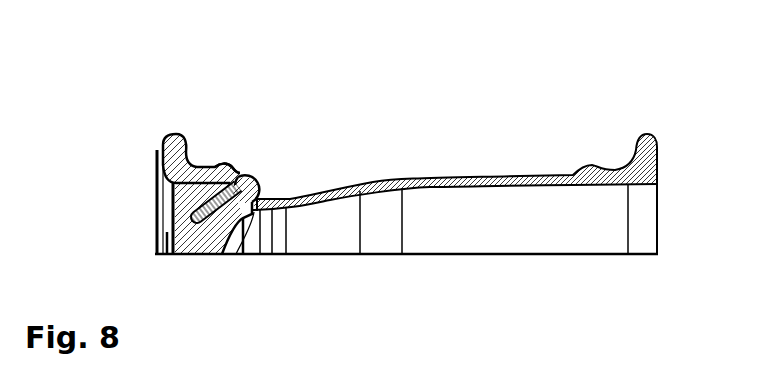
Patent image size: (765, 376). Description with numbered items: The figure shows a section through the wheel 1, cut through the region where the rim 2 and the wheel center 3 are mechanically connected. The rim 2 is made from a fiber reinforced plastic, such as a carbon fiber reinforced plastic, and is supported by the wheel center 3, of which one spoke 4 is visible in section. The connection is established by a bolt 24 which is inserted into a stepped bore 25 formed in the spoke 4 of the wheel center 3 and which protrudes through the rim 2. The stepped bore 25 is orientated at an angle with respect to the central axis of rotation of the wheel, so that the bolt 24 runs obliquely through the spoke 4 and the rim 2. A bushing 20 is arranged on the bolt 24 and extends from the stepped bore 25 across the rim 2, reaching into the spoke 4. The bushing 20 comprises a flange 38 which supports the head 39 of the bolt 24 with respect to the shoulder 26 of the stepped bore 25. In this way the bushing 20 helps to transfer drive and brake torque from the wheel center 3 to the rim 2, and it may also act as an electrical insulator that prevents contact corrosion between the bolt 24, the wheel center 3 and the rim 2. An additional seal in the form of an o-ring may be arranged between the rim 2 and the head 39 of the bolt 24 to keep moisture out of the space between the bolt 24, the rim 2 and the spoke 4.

The wheel 1 is at (156, 124).
The rim 2 is at (431, 144).
The wheel center 3 is at (149, 257).
The spoke 4 is at (160, 185).
The bushing 20 is at (223, 166).
The bolt 24 is at (224, 224).
The stepped bore 25 is at (172, 214).
The shoulder 26 is at (240, 173).
The flange 38 is at (261, 215).
The head 39 is at (259, 194).